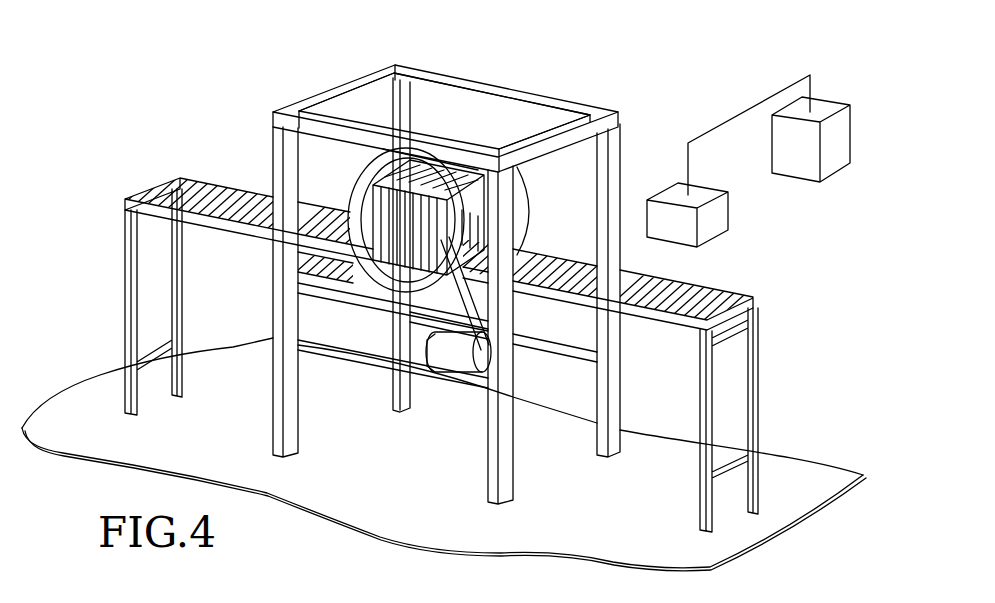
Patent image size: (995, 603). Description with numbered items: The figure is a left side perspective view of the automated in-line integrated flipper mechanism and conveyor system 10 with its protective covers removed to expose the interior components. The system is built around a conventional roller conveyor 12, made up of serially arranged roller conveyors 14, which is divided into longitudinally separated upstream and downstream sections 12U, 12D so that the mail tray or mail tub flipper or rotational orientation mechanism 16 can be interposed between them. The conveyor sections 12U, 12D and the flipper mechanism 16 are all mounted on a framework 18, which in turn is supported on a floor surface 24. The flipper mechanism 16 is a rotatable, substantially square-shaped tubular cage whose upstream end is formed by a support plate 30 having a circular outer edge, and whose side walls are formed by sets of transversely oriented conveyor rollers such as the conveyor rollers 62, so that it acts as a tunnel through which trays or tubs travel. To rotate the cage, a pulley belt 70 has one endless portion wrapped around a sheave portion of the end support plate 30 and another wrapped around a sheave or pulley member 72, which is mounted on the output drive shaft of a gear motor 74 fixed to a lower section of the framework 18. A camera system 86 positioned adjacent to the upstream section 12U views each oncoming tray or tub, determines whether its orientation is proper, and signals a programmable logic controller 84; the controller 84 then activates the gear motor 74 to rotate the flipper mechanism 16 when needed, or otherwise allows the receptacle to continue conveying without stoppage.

The in-line integrated flipper mechanism and conveyor system 10 is at (695, 72).
The roller conveyor 12 is at (137, 192).
The downstream roller conveyor section 12D is at (223, 187).
The upstream roller conveyor section 12U is at (697, 282).
The roller conveyors 14 is at (750, 302).
The mail tray or mail tub flipper or rotational orientation mechanism 16 is at (473, 122).
The framework 18 is at (572, 107).
The floor surface 24 is at (620, 532).
The support plate 30 is at (527, 210).
The conveyor rollers 62 is at (390, 220).
The pulley belt 70 is at (433, 297).
The sheave or pulley member 72 is at (470, 372).
The gear motor 74 is at (428, 365).
The programmable logic controller 84 is at (838, 140).
The camera system 86 is at (723, 205).